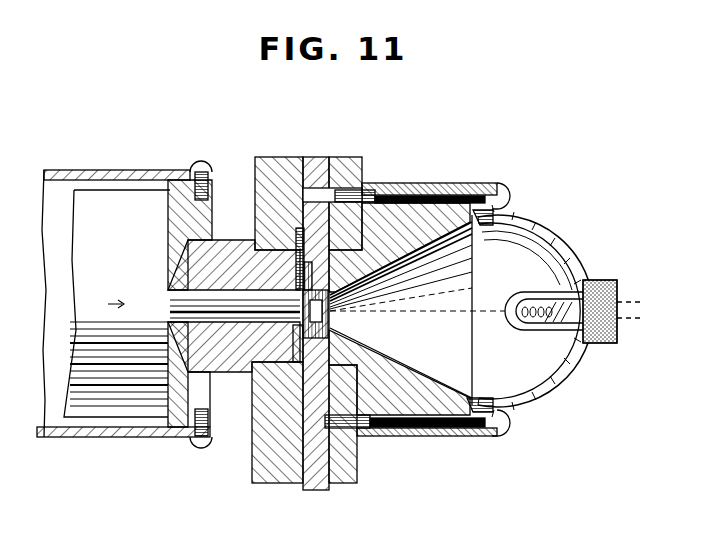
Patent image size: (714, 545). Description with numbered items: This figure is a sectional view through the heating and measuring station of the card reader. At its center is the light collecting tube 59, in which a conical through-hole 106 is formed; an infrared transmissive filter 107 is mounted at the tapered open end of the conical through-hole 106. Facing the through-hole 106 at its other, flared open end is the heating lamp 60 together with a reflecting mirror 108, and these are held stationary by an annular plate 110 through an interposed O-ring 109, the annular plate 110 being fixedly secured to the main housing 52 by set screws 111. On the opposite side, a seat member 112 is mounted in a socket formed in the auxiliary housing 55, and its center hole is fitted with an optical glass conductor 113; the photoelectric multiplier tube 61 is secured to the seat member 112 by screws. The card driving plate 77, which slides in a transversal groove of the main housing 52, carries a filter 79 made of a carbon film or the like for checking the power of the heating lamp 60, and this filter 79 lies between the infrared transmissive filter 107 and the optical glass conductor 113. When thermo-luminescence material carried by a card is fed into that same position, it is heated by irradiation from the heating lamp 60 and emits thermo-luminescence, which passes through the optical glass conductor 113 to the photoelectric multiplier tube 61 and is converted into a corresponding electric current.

The photoelectric multiplier tube 61 is at (131, 172).
The optical glass conductor 113 is at (225, 292).
The auxiliary housing 55 is at (282, 160).
The main housing 52 is at (336, 160).
The card driving plate 77 is at (300, 246).
The infrared transmissive filter 107 is at (322, 262).
The filter 79 is at (292, 322).
The conical through-hole 106 is at (404, 266).
The seat member 112 is at (247, 369).
The O-ring 109 is at (502, 198).
The annular plate 110 is at (497, 218).
The reflecting mirror 108 is at (542, 311).
The heating lamp 60 is at (566, 282).
The light collecting tube 59 is at (426, 416).
The set screws 111 is at (500, 428).